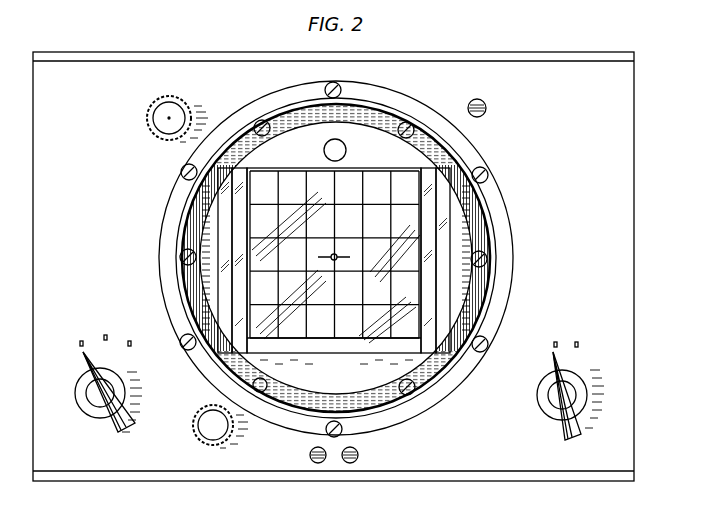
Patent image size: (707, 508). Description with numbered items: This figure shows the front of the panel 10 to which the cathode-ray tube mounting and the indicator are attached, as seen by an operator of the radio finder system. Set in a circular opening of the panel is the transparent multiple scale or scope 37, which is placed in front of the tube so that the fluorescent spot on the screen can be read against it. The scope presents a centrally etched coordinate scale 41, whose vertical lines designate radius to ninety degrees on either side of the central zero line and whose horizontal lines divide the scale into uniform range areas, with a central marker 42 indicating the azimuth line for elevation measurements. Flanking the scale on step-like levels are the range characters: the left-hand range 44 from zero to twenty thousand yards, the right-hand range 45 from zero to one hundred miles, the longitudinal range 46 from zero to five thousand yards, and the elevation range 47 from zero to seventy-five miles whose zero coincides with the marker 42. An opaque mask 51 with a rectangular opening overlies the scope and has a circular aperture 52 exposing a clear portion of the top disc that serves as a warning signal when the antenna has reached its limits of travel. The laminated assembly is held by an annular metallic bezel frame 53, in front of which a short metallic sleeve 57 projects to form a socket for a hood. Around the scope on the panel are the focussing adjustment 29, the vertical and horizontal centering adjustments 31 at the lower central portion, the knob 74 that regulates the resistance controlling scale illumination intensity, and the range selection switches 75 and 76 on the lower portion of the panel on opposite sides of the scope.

The panel 10 is at (629, 161).
The focussing adjustment 29 is at (486, 108).
The vertical and horizontal adjustments 31 is at (385, 490).
The multiple scale or scope 37 is at (345, 380).
The coordinate scale 41 is at (393, 221).
The marker 42 is at (335, 260).
The left-hand range 44 is at (237, 212).
The right-hand range 45 is at (424, 228).
The longitudinal range 46 is at (228, 224).
The elevation range 47 is at (442, 248).
The opaque mask 51 is at (378, 158).
The circular aperture 52 is at (324, 150).
The bezel frame 53 is at (437, 153).
The metallic sleeve 57 is at (251, 122).
The knob 74 is at (147, 118).
The switch 75 is at (90, 391).
The switch 76 is at (580, 397).